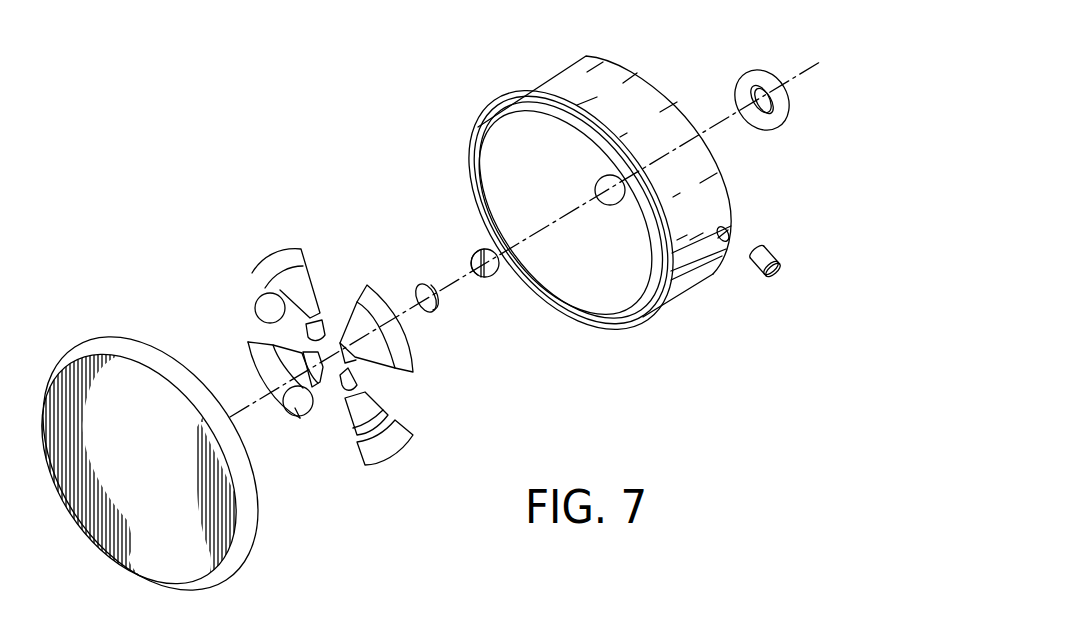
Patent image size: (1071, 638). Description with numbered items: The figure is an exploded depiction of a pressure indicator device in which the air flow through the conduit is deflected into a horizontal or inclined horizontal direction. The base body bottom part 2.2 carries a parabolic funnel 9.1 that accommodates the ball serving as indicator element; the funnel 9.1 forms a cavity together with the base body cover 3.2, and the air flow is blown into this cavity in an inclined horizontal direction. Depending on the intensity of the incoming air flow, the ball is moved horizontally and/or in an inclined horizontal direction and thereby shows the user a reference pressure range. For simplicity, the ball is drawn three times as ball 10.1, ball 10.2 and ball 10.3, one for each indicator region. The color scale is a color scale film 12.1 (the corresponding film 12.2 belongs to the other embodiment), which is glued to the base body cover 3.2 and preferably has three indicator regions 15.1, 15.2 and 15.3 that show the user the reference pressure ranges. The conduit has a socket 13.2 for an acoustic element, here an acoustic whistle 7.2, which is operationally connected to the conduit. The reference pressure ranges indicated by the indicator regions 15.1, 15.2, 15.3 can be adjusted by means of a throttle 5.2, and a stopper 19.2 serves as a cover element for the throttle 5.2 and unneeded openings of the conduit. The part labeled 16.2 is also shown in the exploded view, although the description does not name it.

The base body cover 3.2 is at (157, 557).
The parabolic funnel 9.1 is at (503, 145).
The base body bottom part 2.2 is at (680, 292).
The ball 10.1 is at (611, 204).
The socket 13.2 is at (731, 227).
The washer 16.2 is at (748, 83).
The acoustic whistle 7.2 is at (757, 272).
The throttle 5.2 is at (478, 256).
The stopper 19.2 is at (432, 312).
The ball 10.3 is at (262, 305).
The indicator region 15.2 is at (372, 303).
The indicator region 15.3 is at (392, 318).
The ball 10.2 is at (296, 410).
The indicator region 15.1 is at (352, 367).
The color scale film 12.1 is at (400, 458).
The color scale film 12.2 is at (412, 637).